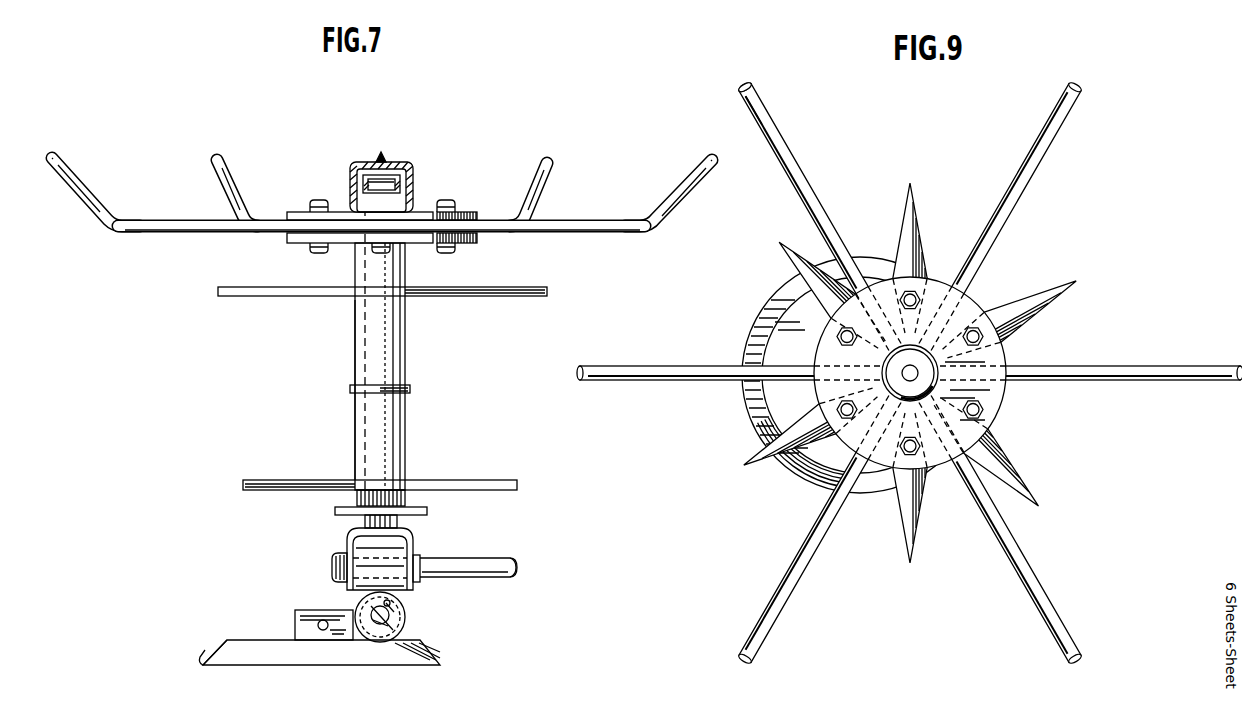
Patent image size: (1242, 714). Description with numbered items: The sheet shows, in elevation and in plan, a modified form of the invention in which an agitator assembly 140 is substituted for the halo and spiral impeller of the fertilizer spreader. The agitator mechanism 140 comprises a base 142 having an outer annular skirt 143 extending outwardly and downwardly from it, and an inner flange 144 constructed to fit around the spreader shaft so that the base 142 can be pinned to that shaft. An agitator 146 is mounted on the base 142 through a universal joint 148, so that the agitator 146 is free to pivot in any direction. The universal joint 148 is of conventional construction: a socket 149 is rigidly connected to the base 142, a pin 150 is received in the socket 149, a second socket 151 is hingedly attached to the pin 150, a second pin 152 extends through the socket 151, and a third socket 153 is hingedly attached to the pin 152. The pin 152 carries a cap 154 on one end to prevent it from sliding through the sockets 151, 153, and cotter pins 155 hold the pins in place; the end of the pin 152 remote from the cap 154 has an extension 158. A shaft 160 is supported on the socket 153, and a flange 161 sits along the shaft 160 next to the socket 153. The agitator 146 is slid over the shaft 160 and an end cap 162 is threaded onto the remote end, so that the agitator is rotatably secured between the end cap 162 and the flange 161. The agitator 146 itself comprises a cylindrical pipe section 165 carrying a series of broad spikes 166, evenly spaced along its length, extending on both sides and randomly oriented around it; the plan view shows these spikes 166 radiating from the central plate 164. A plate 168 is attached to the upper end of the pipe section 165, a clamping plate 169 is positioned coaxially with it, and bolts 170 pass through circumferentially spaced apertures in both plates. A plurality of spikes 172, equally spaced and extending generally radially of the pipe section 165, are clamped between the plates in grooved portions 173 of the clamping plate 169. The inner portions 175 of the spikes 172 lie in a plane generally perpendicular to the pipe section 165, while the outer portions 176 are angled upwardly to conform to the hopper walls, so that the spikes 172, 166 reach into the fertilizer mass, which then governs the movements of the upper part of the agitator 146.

In FIG. 7, the agitator assembly 140 is at (391, 420).
In FIG. 7, the base 142 is at (247, 638).
In FIG. 9, the base 142 is at (755, 403).
In FIG. 7, the outer annular skirt 143 is at (213, 660).
In FIG. 7, the inner flange 144 is at (297, 620).
In FIG. 7, the agitator 146 is at (345, 376).
In FIG. 7, the universal joint 148 is at (403, 584).
In FIG. 7, the socket 149 is at (403, 622).
In FIG. 7, the pin 150 is at (413, 637).
In FIG. 7, the second socket 151 is at (385, 567).
In FIG. 7, the second pin 152 is at (462, 563).
In FIG. 7, the third socket 153 is at (413, 535).
In FIG. 7, the cap 154 is at (332, 568).
In FIG. 7, the cotter pins 155 is at (418, 580).
In FIG. 7, the extension 158 is at (513, 578).
In FIG. 7, the shaft 160 is at (355, 497).
In FIG. 7, the flange 161 is at (405, 185).
In FIG. 7, the end cap 162 is at (410, 163).
In FIG. 9, the end cap 162 is at (923, 360).
In FIG. 9, the flange plate 164 is at (940, 470).
In FIG. 7, the cylindrical pipe section 165 is at (405, 433).
In FIG. 7, the spikes 166 is at (490, 297).
In FIG. 9, the spikes 166 is at (913, 233).
In FIG. 7, the plate 168 is at (473, 241).
In FIG. 7, the clamping plate 169 is at (470, 212).
In FIG. 7, the bolts 170 is at (372, 253).
In FIG. 9, the bolts 170 is at (917, 293).
In FIG. 7, the spikes 172 is at (78, 167).
In FIG. 9, the spikes 172 is at (1025, 197).
In FIG. 7, the grooved portions 173 is at (342, 211).
In FIG. 7, the inner portions 175 is at (187, 231).
In FIG. 9, the inner portions 175 is at (815, 193).
In FIG. 7, the outer portions 176 is at (83, 195).
In FIG. 9, the outer portions 176 is at (772, 118).